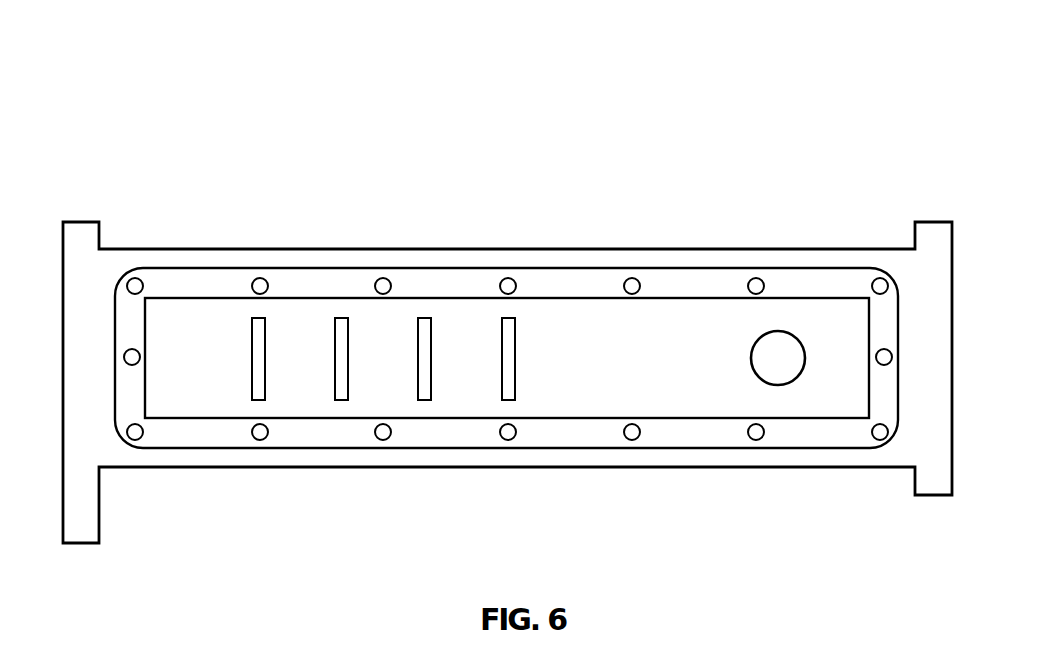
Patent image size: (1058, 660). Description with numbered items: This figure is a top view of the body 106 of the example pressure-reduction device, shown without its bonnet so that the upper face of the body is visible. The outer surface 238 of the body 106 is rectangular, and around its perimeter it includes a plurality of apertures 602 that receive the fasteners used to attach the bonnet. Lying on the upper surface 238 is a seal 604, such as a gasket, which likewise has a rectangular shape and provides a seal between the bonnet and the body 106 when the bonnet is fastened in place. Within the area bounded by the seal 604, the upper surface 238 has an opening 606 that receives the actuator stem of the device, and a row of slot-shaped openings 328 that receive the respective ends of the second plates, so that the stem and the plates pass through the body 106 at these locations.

The body 106 is at (148, 62).
The seal 604 is at (204, 282).
The outer surface 238 is at (655, 374).
The apertures 602 is at (135, 286).
The openings 328 is at (252, 350).
The opening 606 is at (776, 360).